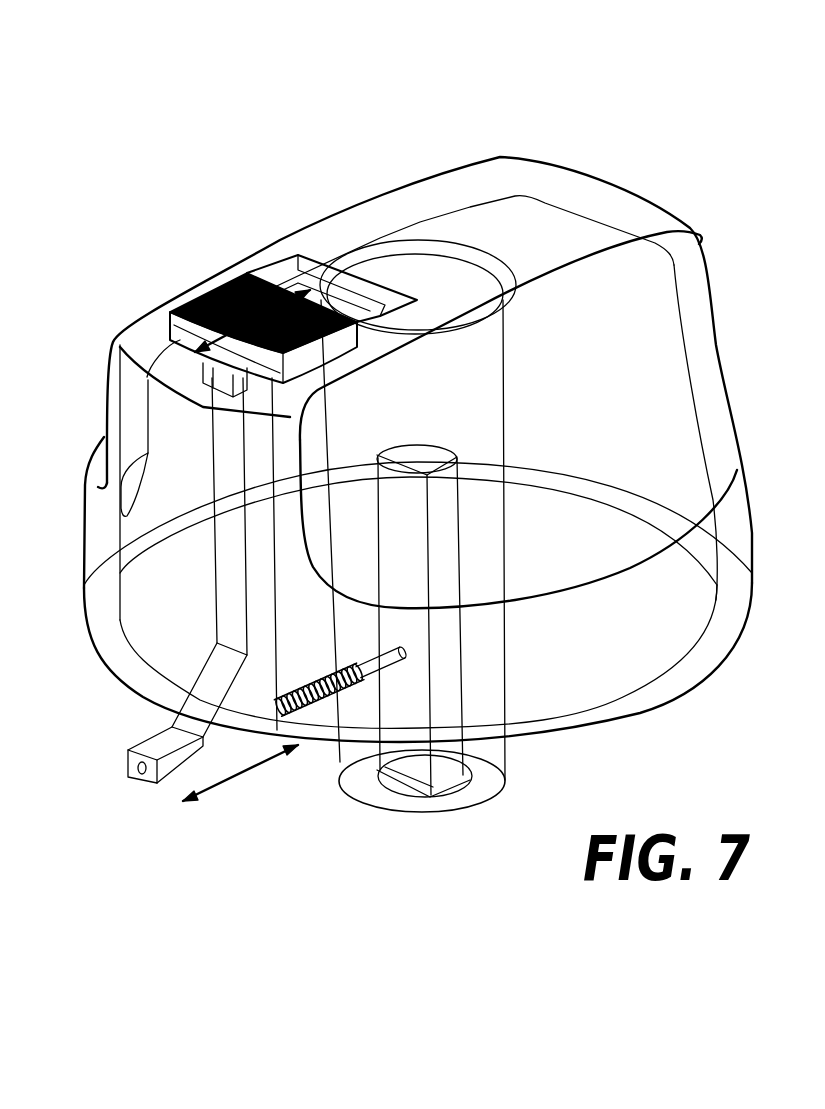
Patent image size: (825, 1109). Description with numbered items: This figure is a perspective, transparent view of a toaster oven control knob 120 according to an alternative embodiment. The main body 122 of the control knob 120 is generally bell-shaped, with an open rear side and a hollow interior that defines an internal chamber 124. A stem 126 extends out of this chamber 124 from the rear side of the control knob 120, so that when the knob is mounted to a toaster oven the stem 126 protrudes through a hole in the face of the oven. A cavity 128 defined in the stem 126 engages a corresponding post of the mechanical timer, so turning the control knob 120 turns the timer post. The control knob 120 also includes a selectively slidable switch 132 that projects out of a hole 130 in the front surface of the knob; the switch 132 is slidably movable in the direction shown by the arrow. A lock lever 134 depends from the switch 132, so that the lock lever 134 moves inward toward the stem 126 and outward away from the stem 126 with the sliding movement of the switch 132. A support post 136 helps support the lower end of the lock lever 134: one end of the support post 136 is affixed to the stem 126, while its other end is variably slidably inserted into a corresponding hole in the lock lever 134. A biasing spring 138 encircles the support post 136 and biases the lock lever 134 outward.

The toaster oven control knob 120 is at (648, 126).
The main body 122 is at (680, 226).
The internal chamber 124 is at (655, 709).
The stem 126 is at (490, 777).
The cavity 128 is at (426, 772).
The hole 130 is at (283, 270).
The switch 132 is at (193, 297).
The lock lever 134 is at (170, 772).
The support post 136 is at (373, 663).
The biasing spring 138 is at (323, 703).